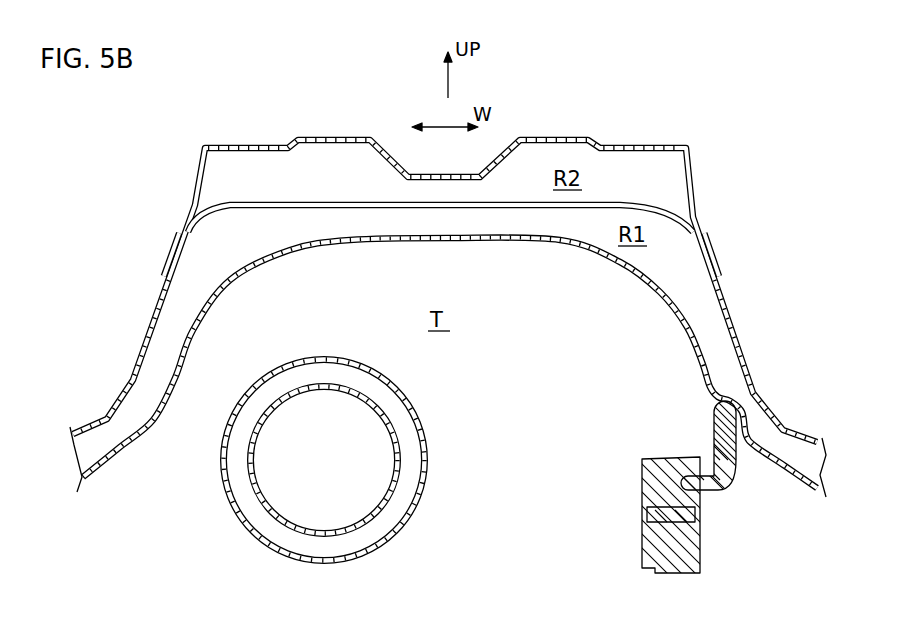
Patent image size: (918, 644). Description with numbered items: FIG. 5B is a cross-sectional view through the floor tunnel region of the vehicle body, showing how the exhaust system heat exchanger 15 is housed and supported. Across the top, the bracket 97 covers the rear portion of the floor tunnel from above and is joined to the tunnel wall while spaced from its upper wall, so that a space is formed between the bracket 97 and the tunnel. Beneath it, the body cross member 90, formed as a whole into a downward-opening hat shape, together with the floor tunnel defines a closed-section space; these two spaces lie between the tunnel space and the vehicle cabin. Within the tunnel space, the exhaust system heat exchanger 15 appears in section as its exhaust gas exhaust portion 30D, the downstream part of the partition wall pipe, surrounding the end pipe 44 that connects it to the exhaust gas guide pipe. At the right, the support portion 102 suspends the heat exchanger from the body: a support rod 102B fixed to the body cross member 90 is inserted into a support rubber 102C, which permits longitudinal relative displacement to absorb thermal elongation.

The bracket 97 is at (557, 137).
The body cross member 90 is at (507, 246).
The exhaust system heat exchanger 15 is at (367, 425).
The exhaust gas exhaust portion 30D is at (417, 408).
The end pipe 44 is at (402, 455).
The support portion 102 is at (683, 512).
The support rod 102B is at (713, 430).
The support rubber 102C is at (645, 477).